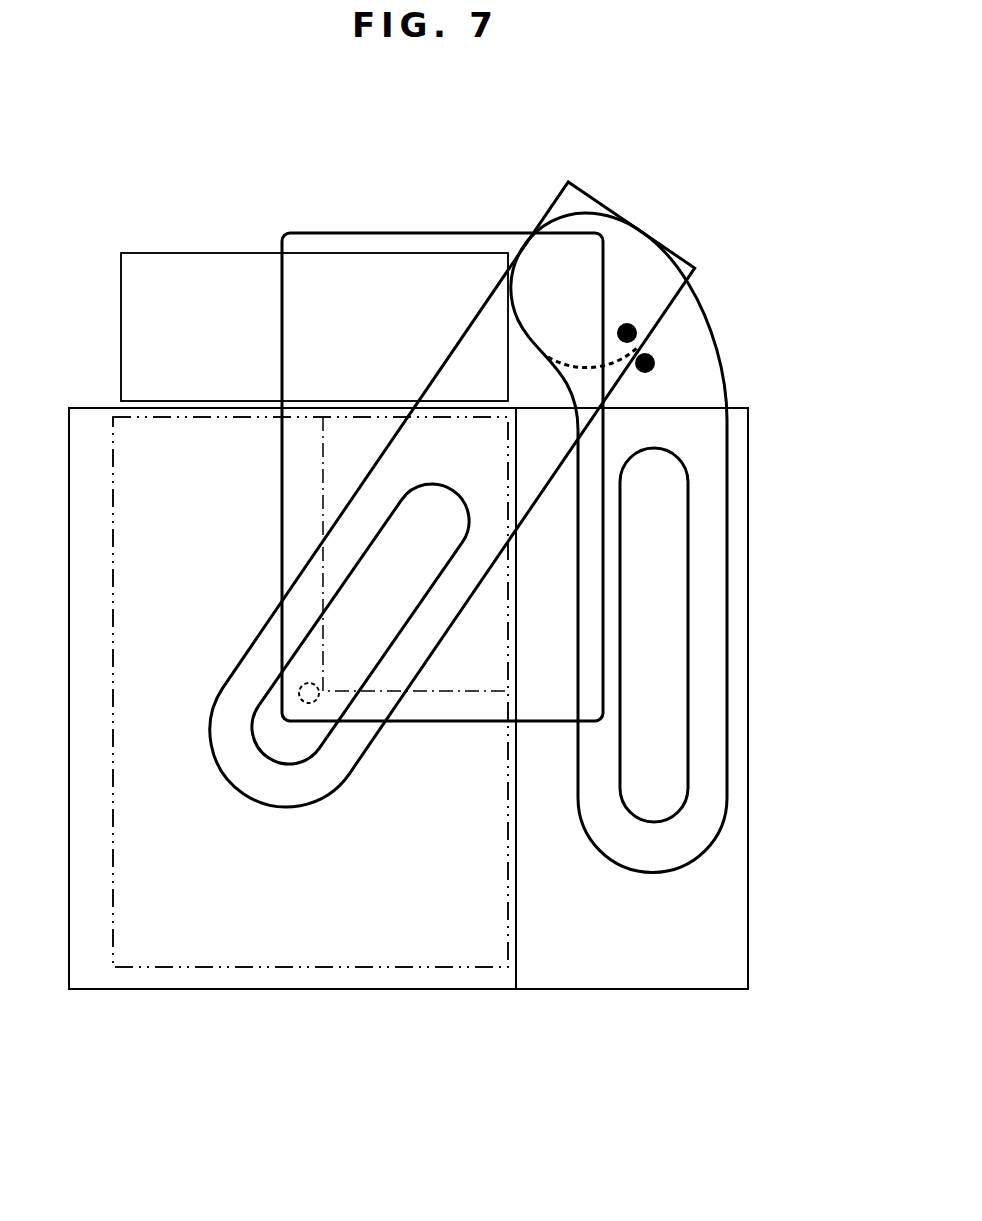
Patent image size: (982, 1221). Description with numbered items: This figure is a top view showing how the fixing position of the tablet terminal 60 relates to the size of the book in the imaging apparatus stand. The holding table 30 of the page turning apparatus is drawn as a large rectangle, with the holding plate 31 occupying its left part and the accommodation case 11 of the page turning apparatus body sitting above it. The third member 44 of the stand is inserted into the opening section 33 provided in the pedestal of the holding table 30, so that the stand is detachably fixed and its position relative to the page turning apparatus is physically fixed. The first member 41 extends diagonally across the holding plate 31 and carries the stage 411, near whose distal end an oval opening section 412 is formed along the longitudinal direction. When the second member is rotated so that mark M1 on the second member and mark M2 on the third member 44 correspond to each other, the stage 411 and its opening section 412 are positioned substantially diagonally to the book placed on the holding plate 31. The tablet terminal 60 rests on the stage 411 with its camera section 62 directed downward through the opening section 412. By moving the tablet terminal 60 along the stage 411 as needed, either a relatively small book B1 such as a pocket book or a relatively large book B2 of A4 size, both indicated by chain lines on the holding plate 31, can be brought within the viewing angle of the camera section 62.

The holding table 30 is at (613, 996).
The holding plate 31 is at (198, 990).
The opening section 33 is at (698, 408).
The accommodation case 11 is at (198, 255).
The tablet terminal 60 is at (410, 233).
The camera section 62 is at (318, 700).
The first member 41 is at (564, 178).
The stage 411 is at (462, 372).
The opening section 412 is at (262, 700).
The third member 44 is at (725, 388).
The mark M1 is at (628, 324).
The mark M2 is at (648, 354).
The A4 size A4 is at (310, 692).
The book of relatively small size B1 is at (418, 692).
The book of relatively large size B2 is at (325, 967).